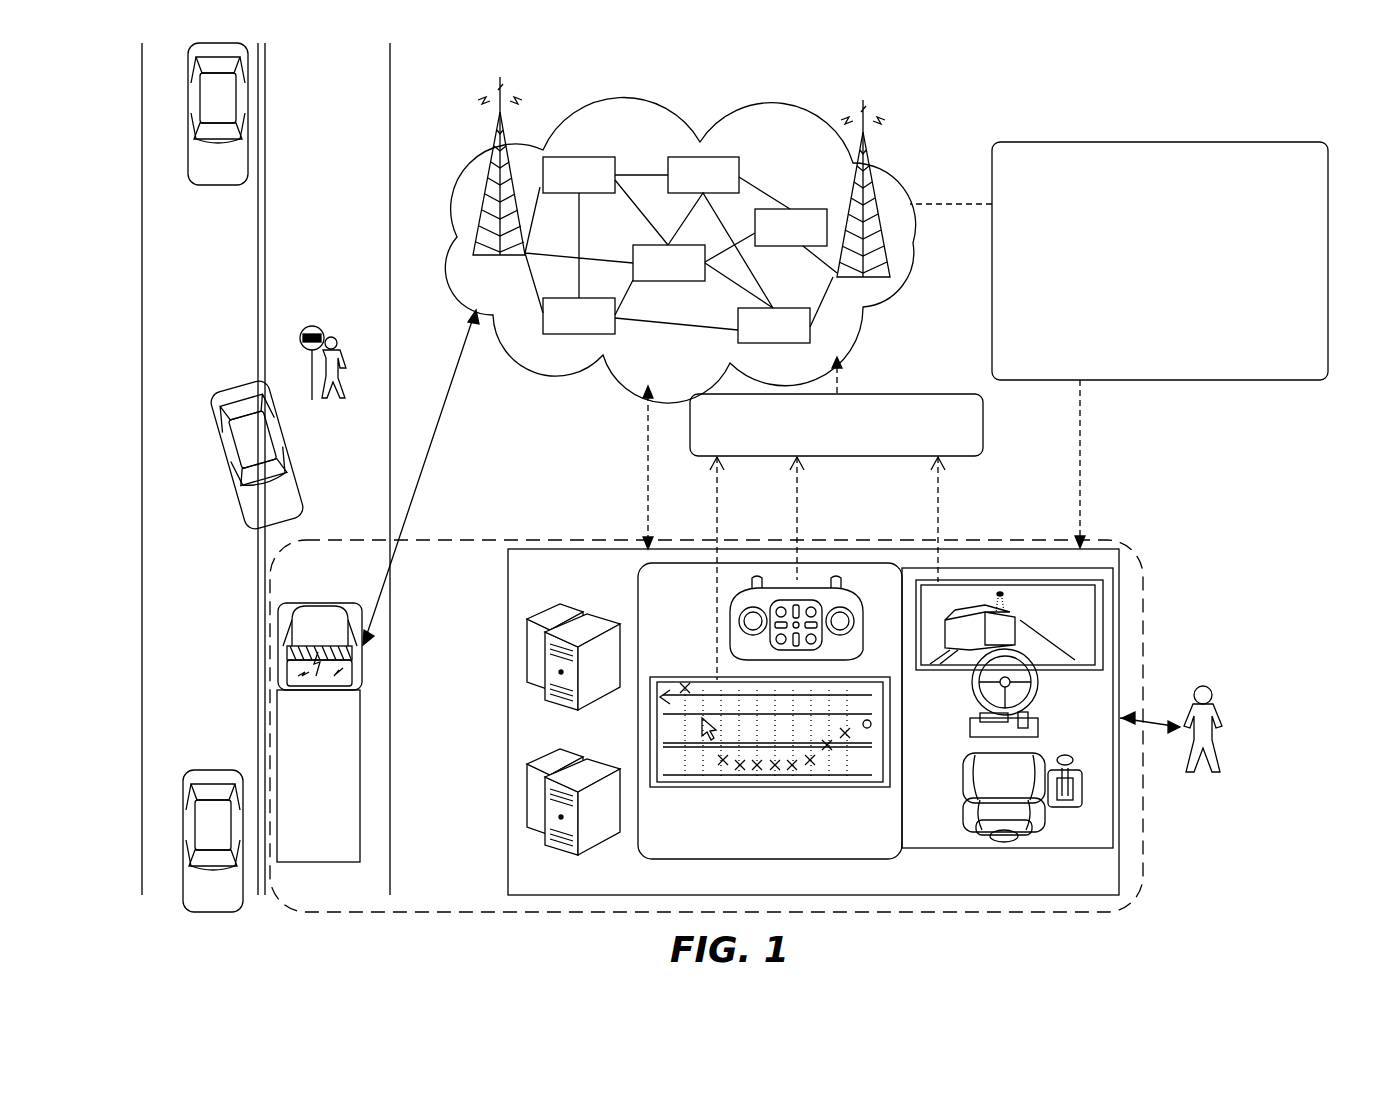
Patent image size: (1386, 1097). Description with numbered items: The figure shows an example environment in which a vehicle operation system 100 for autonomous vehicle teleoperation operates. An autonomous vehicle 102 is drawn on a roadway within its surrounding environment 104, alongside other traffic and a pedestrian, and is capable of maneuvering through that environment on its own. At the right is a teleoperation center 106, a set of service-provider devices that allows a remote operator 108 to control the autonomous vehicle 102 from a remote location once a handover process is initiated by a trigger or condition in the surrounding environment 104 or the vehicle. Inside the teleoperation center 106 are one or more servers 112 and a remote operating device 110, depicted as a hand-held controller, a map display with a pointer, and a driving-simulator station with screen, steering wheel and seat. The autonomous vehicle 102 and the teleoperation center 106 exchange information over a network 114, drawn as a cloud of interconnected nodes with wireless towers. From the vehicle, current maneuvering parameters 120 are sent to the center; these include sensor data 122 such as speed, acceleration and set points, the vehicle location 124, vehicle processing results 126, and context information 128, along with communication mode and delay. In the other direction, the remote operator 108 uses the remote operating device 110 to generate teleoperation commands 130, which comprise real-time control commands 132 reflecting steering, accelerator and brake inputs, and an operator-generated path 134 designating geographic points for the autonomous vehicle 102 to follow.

The vehicle operation system 100 is at (1136, 575).
The autonomous vehicle 102 is at (355, 697).
The surrounding environment 104 is at (362, 103).
The teleoperation center 106 is at (509, 548).
The remote operator 108 is at (1202, 686).
The remote operating device 110 is at (638, 578).
The servers 112 is at (575, 752).
The network 114 is at (680, 112).
The current maneuvering parameters 120 is at (1267, 174).
The sensor data 122 is at (1027, 180).
The vehicle location 124 is at (1036, 258).
The vehicle processing results 126 is at (1157, 283).
The context information 128 is at (1097, 305).
The teleoperation commands 130 is at (934, 454).
The real-time control commands 132 is at (940, 520).
The operator-generated path 134 is at (717, 505).